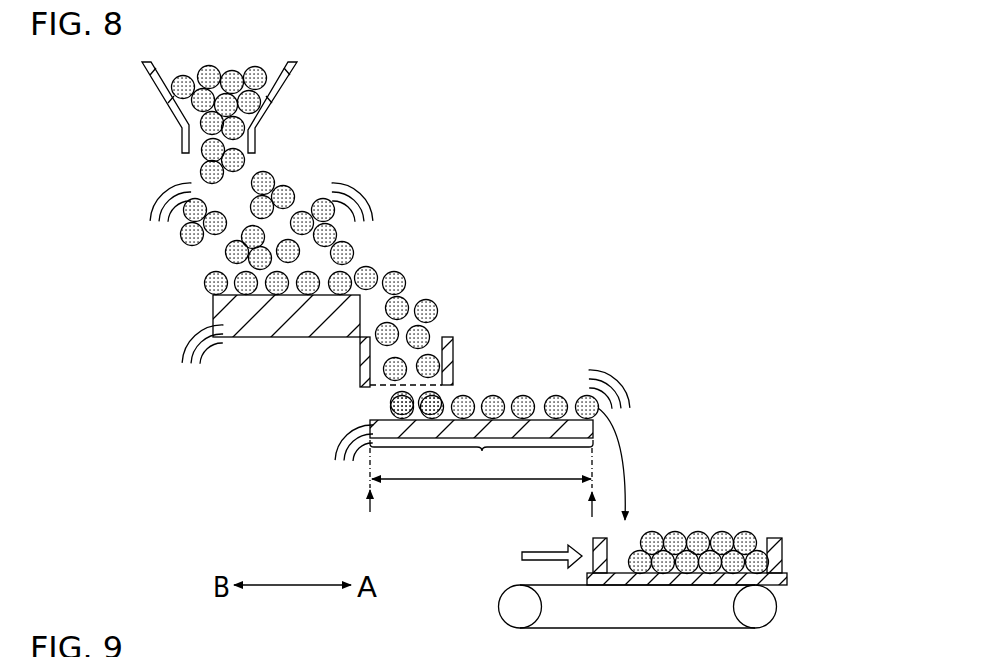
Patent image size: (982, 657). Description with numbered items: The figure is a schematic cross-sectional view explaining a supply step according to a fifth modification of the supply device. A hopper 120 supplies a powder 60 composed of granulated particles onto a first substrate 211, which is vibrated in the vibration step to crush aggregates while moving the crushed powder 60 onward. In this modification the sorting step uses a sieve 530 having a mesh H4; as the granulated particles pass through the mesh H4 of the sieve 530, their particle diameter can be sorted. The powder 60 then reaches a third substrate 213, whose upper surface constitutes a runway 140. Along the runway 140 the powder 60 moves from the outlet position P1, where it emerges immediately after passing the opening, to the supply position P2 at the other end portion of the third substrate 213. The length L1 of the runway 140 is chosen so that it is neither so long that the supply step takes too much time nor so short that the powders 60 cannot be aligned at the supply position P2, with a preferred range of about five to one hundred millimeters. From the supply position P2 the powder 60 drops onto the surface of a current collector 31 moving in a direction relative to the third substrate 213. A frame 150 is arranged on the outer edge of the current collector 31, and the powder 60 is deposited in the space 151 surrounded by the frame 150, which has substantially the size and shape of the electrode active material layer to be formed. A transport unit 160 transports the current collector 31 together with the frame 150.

The powder 60 is at (258, 82).
The hopper 120 is at (158, 92).
The first substrate 211 is at (262, 337).
The sieve 530 is at (445, 337).
The mesh H4 is at (453, 367).
The third substrate 213 is at (507, 417).
The runway 140 is at (481, 405).
The length of the runway L1 is at (481, 481).
The outlet position P1 is at (375, 516).
The supply position P2 is at (596, 517).
The space 151 is at (622, 560).
The frame 150 is at (775, 537).
The current collector 31 is at (780, 582).
The transport unit 160 is at (502, 607).